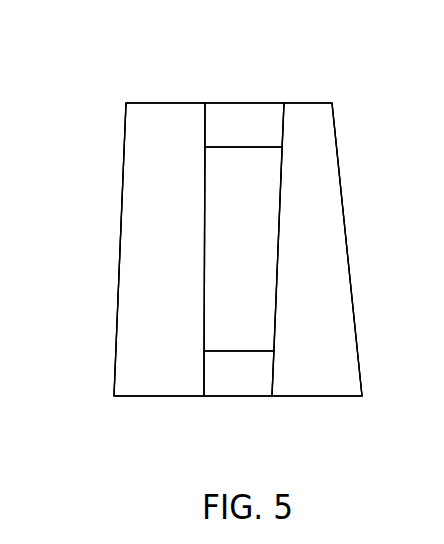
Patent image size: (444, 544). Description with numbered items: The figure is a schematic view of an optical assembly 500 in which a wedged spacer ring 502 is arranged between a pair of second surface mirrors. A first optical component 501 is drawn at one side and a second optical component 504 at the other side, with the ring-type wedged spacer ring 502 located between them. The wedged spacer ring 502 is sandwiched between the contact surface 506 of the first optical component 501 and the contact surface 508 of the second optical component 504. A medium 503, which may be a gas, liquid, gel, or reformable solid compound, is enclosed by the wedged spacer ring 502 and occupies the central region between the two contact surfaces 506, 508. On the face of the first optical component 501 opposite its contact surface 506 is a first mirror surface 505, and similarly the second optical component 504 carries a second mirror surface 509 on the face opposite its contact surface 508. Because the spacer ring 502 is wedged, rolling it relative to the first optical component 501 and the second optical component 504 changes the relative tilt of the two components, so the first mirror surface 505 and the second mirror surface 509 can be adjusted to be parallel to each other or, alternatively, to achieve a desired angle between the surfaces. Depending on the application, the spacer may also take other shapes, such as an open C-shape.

The optical assembly 500 is at (108, 89).
The first optical component 501 is at (173, 258).
The wedged spacer ring 502 is at (258, 137).
The medium 503 is at (260, 258).
The second optical component 504 is at (333, 258).
The first mirror surface 505 is at (115, 350).
The contact surface 506 is at (204, 121).
The contact surface 508 is at (285, 125).
The second mirror surface 509 is at (357, 322).